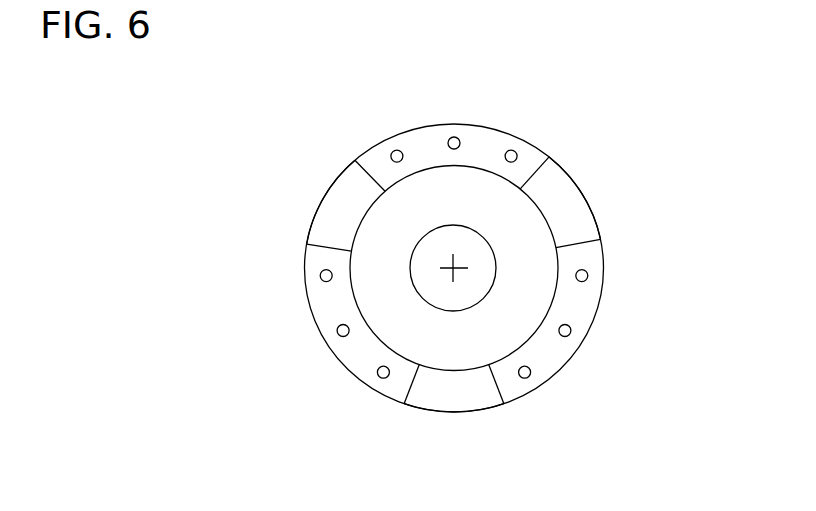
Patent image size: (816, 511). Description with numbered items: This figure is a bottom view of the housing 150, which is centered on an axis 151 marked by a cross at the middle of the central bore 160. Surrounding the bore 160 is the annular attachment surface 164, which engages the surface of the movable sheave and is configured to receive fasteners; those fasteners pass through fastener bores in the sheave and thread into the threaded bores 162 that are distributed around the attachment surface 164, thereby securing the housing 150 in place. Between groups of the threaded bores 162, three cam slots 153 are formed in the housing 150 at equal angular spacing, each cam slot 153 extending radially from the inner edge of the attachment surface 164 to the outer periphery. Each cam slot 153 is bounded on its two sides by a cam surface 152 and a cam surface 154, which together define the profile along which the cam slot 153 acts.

The housing 150 is at (497, 97).
The axis 151 is at (457, 275).
The cam surface 152 is at (537, 177).
The cam slot 153 is at (558, 208).
The cam surface 154 is at (575, 244).
The bore 160 is at (438, 225).
The threaded bore 162 is at (398, 150).
The attachment surface 164 is at (330, 307).